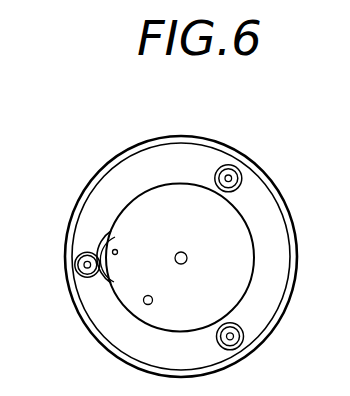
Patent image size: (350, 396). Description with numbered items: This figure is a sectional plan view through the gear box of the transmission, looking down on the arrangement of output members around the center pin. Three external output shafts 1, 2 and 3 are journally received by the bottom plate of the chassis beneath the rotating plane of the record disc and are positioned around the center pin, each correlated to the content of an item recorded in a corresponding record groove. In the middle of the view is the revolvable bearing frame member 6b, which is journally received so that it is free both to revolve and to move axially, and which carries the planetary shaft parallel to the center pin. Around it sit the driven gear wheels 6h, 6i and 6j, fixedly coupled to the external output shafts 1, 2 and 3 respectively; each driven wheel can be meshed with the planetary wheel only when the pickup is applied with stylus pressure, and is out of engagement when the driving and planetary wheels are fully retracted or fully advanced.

The external output shaft 1 is at (78, 257).
The external output shaft 2 is at (231, 337).
The external output shaft 3 is at (229, 178).
The revolvable bearing frame member 6b is at (197, 185).
The driven gear wheel 6h is at (78, 275).
The driven gear wheel 6i is at (242, 328).
The driven gear wheel 6j is at (240, 185).